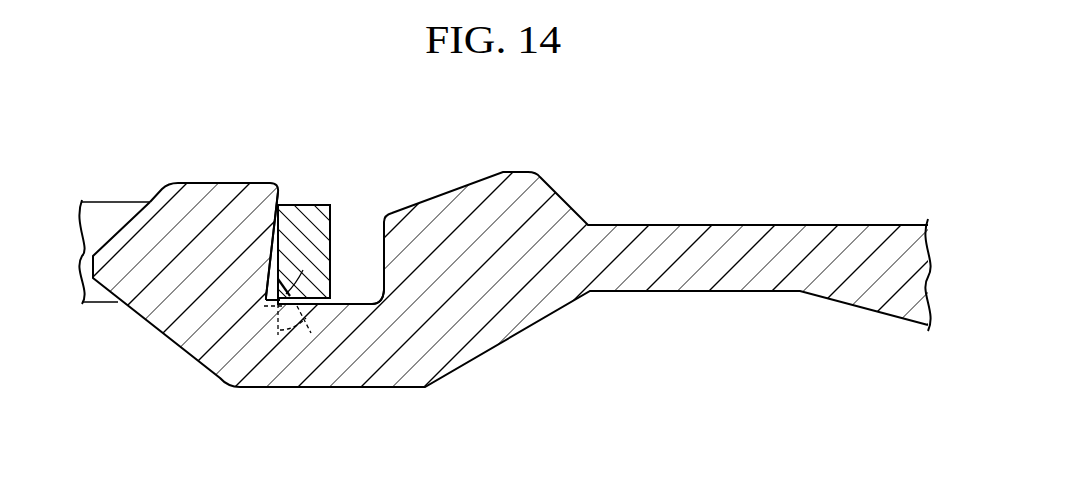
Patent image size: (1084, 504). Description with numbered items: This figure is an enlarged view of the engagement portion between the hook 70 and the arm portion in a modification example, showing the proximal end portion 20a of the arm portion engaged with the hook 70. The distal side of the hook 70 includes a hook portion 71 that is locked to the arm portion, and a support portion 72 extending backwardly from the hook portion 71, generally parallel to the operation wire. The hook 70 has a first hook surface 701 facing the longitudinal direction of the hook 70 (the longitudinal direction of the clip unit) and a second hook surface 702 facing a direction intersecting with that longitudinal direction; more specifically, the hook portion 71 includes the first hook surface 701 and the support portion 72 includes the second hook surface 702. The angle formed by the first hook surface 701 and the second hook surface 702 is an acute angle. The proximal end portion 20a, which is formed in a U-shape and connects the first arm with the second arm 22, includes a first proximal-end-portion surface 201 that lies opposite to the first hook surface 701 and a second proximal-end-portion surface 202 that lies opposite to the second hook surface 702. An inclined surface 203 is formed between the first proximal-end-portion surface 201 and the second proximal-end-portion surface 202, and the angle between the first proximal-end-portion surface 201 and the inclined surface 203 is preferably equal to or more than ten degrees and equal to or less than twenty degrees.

The hook 70 is at (617, 211).
The hook portion 71 is at (173, 217).
The first hook surface 701 is at (280, 276).
The second hook surface 702 is at (352, 303).
The support portion 72 is at (278, 359).
The proximal end portion 20a is at (327, 216).
The first proximal-end-portion surface 201 is at (277, 224).
The second proximal-end-portion surface 202 is at (322, 301).
The inclined surface 203 is at (268, 301).
The second arm 22 is at (102, 294).